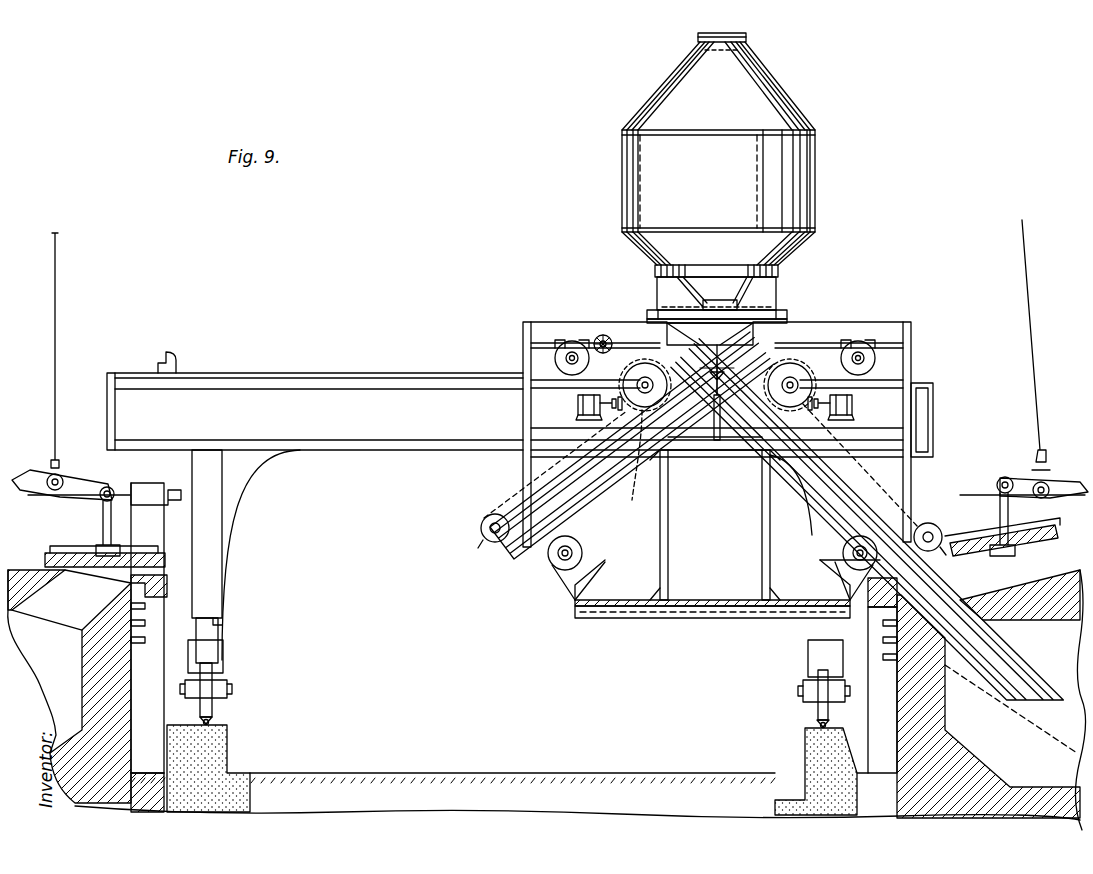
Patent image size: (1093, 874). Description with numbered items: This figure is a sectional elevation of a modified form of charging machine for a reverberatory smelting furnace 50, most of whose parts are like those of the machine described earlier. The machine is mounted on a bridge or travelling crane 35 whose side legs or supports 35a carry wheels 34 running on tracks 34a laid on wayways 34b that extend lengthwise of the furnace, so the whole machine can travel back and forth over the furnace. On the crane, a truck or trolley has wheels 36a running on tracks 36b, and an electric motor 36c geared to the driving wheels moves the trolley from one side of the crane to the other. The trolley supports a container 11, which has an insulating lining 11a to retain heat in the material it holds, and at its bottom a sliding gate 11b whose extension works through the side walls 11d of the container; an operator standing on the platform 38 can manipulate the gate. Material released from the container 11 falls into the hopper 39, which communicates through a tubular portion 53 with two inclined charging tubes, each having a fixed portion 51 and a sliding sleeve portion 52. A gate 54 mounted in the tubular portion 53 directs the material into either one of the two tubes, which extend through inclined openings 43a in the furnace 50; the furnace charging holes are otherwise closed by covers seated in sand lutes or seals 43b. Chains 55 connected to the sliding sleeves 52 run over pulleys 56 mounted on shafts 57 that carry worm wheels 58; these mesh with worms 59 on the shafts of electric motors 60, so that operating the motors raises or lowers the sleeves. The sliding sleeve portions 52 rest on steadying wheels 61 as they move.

The container 11 is at (800, 120).
The insulating lining 11a is at (772, 252).
The sliding gate 11b is at (722, 303).
The side walls 11d is at (786, 312).
The wheels 34 is at (212, 700).
The tracks 34a is at (212, 722).
The wayways 34b is at (212, 747).
The bridge or travelling crane 35 is at (934, 412).
The side legs or supports 35a is at (224, 606).
The wheels 36a is at (556, 356).
The tracks 36b is at (336, 372).
The electric motor 36c is at (597, 338).
The platform 38 is at (712, 600).
The hopper 39 is at (710, 332).
The inclined openings 43a is at (168, 545).
The sand lutes or seals 43b is at (170, 568).
The reverberatory furnace 50 is at (15, 568).
The fixed portions 51 is at (808, 470).
The sliding sleeve portions 52 is at (590, 510).
The tubular portion 53 is at (717, 392).
The gate 54 is at (717, 329).
The chains 55 is at (500, 512).
The pulleys 56 is at (630, 365).
The shafts 57 is at (645, 377).
The worm wheels 58 is at (622, 372).
The worms 59 is at (770, 460).
The electric motors 60 is at (578, 404).
The steadying wheels 61 is at (583, 554).